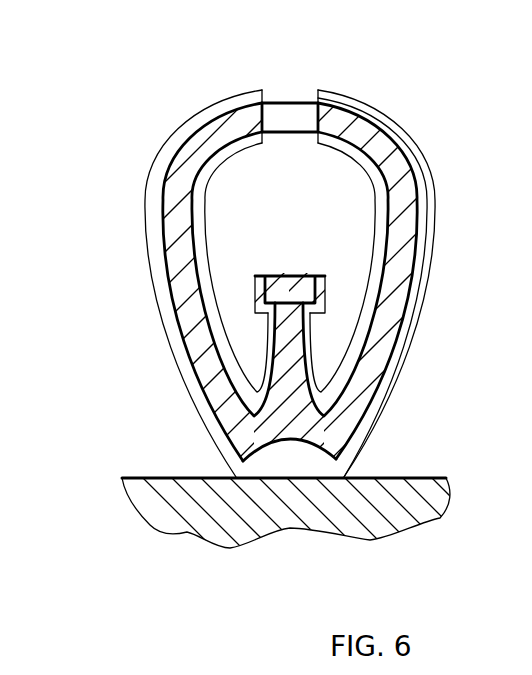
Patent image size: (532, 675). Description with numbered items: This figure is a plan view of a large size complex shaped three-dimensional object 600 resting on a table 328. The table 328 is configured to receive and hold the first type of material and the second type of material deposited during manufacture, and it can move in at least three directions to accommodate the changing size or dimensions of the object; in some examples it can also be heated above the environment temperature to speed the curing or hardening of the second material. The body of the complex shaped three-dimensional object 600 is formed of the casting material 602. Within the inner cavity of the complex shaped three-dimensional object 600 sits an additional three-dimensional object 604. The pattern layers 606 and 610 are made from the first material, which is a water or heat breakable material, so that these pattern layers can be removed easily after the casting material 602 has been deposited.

The complex shaped 3D object 600 is at (182, 101).
The pattern layer 610 is at (150, 170).
The casting material 602 is at (386, 305).
The pattern layer 606 is at (212, 178).
The additional 3D object 604 is at (305, 292).
The table 328 is at (347, 522).